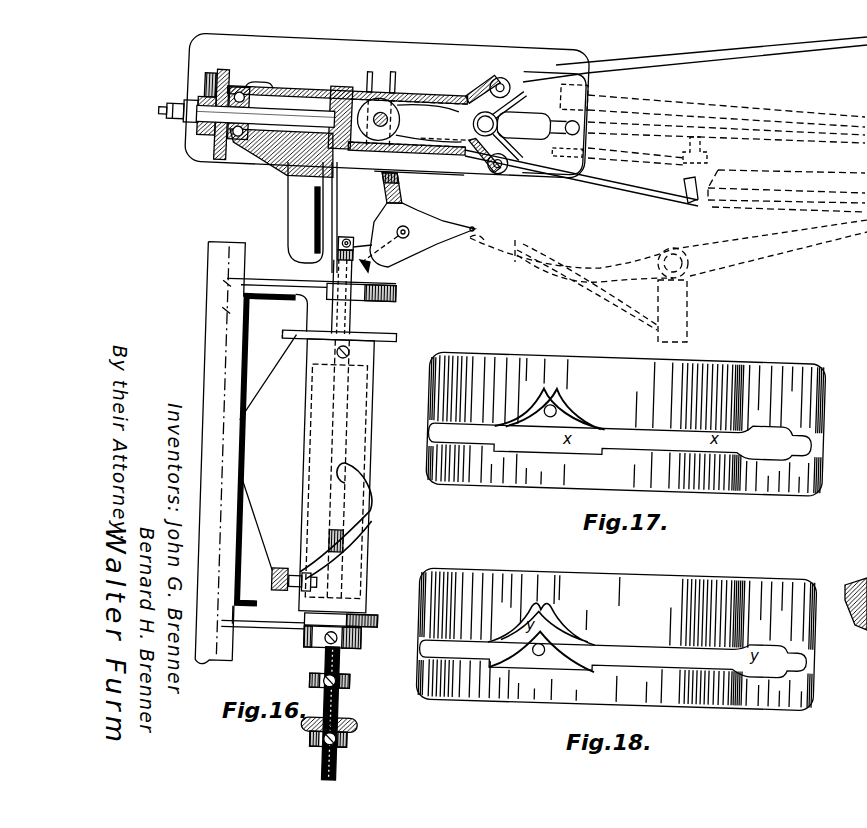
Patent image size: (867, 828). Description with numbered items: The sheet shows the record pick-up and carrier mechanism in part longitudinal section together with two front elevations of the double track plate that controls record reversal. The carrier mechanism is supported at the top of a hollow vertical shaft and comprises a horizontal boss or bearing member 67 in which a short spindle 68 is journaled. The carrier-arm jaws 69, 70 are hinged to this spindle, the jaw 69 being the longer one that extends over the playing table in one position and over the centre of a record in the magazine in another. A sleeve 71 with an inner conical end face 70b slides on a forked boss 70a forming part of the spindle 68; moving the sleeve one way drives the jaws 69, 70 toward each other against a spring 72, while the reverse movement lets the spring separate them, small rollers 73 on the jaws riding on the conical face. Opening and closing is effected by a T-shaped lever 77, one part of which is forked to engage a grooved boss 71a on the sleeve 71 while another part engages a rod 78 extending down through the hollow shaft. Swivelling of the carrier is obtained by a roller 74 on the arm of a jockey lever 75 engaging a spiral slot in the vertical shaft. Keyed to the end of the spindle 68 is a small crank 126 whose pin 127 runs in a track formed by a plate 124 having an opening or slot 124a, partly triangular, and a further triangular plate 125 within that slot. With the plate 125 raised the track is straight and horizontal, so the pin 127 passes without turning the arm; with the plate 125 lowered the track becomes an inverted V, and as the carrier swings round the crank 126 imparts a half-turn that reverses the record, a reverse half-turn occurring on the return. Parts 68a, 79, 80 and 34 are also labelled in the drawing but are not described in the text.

In FIG. 16, the crank pin 127 is at (179, 103).
In FIG. 16, the small crank 126 is at (222, 69).
In FIG. 16, the horizontal boss or bearing member 67 is at (262, 90).
In FIG. 16, the short spindle 68 is at (287, 102).
In FIG. 16, the pin 68a is at (392, 118).
In FIG. 16, the carrier-arm jaw 69 is at (795, 108).
In FIG. 16, the carrier-arm jaw 70 is at (436, 152).
In FIG. 16, the forked boss 70a is at (447, 180).
In FIG. 16, the inner conical end face 70b is at (470, 87).
In FIG. 16, the sleeve 71 is at (430, 89).
In FIG. 16, the grooved boss 71a is at (381, 76).
In FIG. 16, the spring 72 is at (498, 118).
In FIG. 16, the small rollers 73 is at (502, 80).
In FIG. 16, the roller 74 is at (296, 590).
In FIG. 16, the jockey lever 75 is at (283, 568).
In FIG. 16, the T-shaped lever 77 is at (417, 215).
In FIG. 16, the rod 78 is at (349, 231).
In FIG. 16, the disk 79 is at (357, 722).
In FIG. 16, the cable 80 is at (567, 262).
In FIG. 17, the plate 124 is at (615, 356).
In FIG. 18, the plate 124 is at (640, 576).
In FIG. 17, the opening or slot 124a is at (571, 400).
In FIG. 18, the opening or slot 124a is at (555, 611).
In FIG. 17, the further plate 125 is at (552, 424).
In FIG. 18, the further plate 125 is at (575, 660).
In FIG. 18, the bracket 34 is at (856, 595).